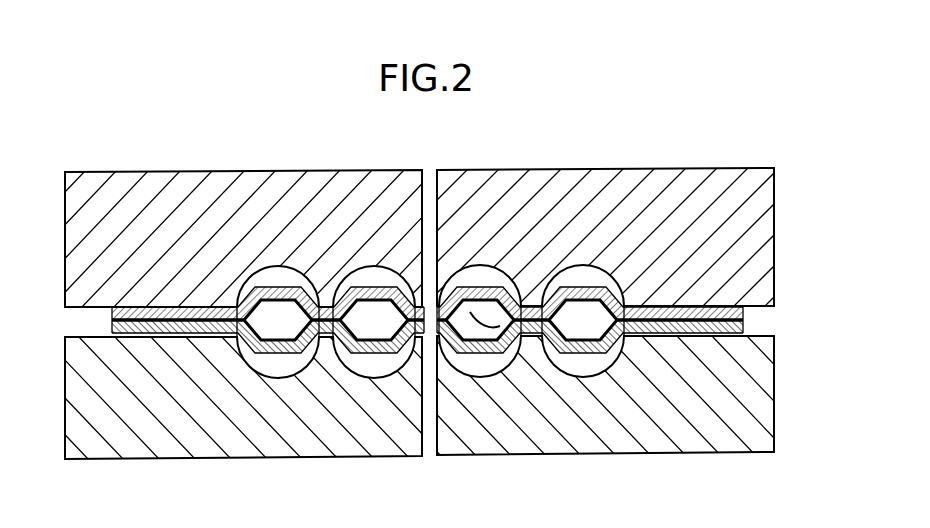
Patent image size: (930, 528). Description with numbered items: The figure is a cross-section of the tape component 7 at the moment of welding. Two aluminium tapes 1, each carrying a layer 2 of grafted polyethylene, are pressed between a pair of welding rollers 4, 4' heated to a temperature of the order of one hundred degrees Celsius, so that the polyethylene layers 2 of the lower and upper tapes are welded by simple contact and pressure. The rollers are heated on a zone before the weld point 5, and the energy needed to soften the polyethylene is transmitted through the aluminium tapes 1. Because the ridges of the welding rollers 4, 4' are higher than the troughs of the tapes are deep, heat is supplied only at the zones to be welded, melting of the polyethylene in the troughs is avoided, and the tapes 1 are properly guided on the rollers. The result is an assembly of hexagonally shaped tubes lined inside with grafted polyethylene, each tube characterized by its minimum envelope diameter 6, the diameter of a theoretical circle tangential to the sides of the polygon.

The tape 1 is at (595, 292).
The layer of grafted polyethylene 2 is at (378, 338).
The welding roller 4 is at (451, 207).
The welding roller 4' is at (432, 423).
The weld point 5 is at (128, 308).
The minimum envelope diameter 6 is at (498, 320).
The tape component 7 is at (285, 285).